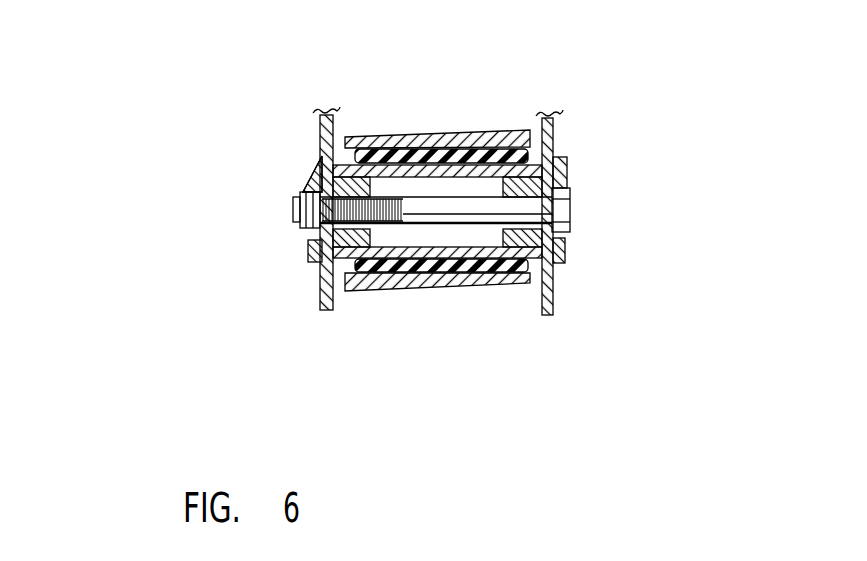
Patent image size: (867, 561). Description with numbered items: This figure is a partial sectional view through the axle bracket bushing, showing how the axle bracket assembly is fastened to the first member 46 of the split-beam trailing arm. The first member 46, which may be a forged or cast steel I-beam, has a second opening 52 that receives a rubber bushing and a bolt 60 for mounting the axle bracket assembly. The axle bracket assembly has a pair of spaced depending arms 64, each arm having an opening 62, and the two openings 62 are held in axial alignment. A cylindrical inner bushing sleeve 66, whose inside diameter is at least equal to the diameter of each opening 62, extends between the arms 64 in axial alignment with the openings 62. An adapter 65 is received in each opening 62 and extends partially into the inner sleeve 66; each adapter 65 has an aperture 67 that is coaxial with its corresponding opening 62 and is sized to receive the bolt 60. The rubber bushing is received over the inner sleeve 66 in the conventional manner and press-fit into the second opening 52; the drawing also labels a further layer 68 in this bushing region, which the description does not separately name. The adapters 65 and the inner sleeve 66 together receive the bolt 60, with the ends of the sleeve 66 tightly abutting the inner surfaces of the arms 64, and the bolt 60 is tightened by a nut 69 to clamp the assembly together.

The first member 46 is at (425, 133).
The second opening 52 is at (347, 262).
The bolt 60 is at (531, 208).
The opening 62 is at (311, 175).
The depending arm 64 is at (563, 163).
The adapter 65 is at (340, 236).
The inner bushing sleeve 66 is at (450, 250).
The aperture 67 is at (571, 226).
The cushion layer 68 is at (397, 265).
The nut 69 is at (311, 184).